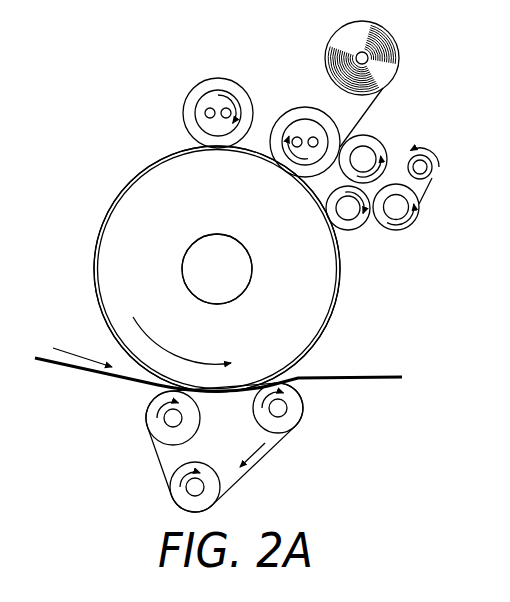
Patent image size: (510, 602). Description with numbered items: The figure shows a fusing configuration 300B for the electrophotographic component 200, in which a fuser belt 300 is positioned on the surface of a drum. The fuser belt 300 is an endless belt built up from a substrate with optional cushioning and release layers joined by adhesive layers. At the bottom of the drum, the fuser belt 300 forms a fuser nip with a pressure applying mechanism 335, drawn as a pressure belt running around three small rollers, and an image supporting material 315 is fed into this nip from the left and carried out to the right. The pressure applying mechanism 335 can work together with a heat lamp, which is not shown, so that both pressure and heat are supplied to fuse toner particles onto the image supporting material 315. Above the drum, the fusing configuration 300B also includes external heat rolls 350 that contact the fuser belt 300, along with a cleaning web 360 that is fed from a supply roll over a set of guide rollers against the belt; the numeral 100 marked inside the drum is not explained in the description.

The printing system 100 is at (230, 210).
The electrophotographic component 200 is at (143, 176).
The fuser belt 300 is at (103, 223).
The fusing configuration 300B is at (133, 67).
The image supporting material 315 is at (123, 376).
The pressure applying mechanism 335 is at (146, 466).
The external heat rolls 350 is at (318, 112).
The cleaning web 360 is at (408, 122).